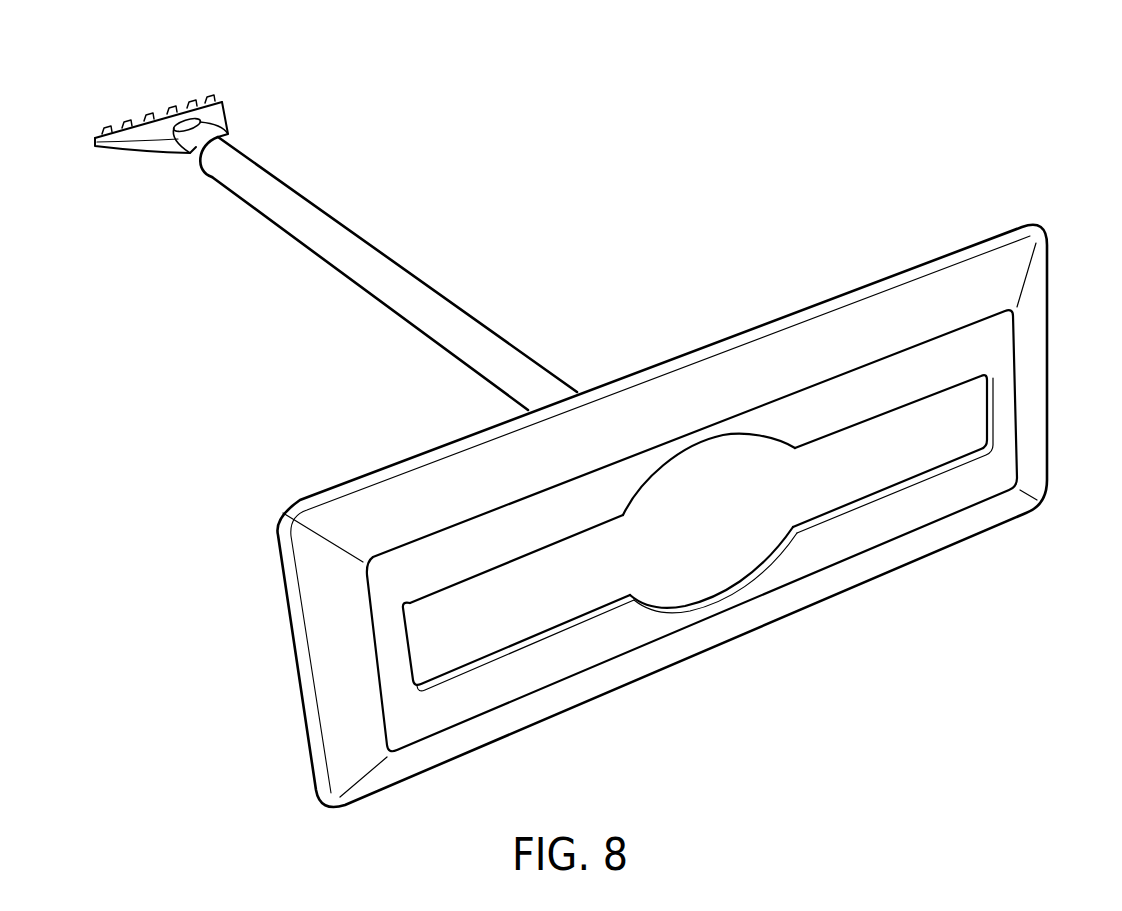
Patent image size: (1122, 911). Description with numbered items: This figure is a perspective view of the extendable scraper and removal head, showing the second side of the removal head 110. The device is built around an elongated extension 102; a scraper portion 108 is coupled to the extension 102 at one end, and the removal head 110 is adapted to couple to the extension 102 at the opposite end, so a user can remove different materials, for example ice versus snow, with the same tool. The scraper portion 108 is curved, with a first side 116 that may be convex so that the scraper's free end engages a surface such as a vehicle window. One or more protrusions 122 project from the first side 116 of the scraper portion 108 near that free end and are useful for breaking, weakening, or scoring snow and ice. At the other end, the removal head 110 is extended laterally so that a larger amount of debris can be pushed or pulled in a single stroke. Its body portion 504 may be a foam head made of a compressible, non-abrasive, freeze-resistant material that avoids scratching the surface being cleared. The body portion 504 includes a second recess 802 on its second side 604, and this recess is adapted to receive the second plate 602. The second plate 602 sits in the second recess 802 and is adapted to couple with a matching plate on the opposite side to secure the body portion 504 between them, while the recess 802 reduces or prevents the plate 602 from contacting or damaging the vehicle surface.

The extension 102 is at (492, 272).
The scraper portion 108 is at (162, 147).
The removal head 110 is at (251, 517).
The first side 116 is at (217, 115).
The protrusions 122 is at (191, 103).
The body portion 504 is at (1047, 297).
The second plate 602 is at (587, 590).
The second side 604 is at (957, 490).
The second recess 802 is at (787, 542).